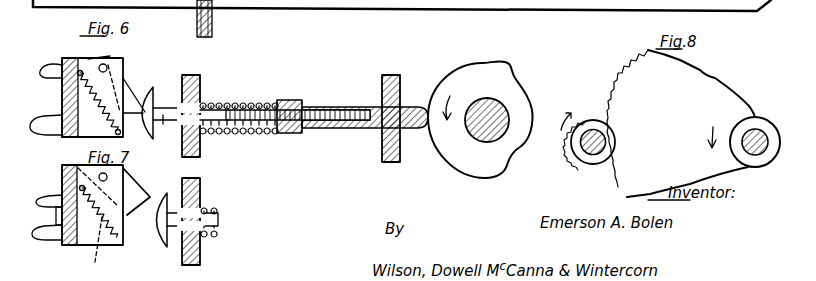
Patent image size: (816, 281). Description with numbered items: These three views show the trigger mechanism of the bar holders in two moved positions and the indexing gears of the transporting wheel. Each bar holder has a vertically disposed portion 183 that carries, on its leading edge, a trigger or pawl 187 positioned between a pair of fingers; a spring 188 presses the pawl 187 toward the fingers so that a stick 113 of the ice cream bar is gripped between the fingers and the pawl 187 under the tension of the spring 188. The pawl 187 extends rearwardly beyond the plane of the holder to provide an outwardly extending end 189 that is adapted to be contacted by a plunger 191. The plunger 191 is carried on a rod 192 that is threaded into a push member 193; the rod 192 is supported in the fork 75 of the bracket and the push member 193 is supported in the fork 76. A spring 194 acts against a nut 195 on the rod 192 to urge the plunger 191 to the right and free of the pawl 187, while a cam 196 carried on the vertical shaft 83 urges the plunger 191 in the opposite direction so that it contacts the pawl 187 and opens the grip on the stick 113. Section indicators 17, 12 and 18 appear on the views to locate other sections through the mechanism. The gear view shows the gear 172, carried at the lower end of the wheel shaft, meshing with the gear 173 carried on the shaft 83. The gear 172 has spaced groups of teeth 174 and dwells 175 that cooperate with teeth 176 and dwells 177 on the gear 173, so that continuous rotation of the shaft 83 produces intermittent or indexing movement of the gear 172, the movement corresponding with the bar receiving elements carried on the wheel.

In FIG. 6, the vertically disposed portion 183 is at (74, 36).
In FIG. 7, the vertically disposed portion 183 is at (75, 247).
In FIG. 6, the trigger or pawl 187 is at (52, 62).
In FIG. 7, the trigger or pawl 187 is at (52, 195).
In FIG. 6, the spring 188 is at (127, 78).
In FIG. 7, the spring 188 is at (98, 224).
In FIG. 6, the plunger 191 is at (153, 98).
In FIG. 7, the plunger 191 is at (157, 223).
In FIG. 6, the rod 192 is at (152, 128).
In FIG. 7, the rod 192 is at (173, 247).
In FIG. 6, the forked end 75 is at (200, 80).
In FIG. 7, the forked end 75 is at (200, 256).
In FIG. 6, the spring 194 is at (223, 130).
In FIG. 7, the spring 194 is at (218, 236).
In FIG. 6, the nut 195 is at (293, 100).
In FIG. 6, the push member 193 is at (380, 127).
In FIG. 6, the forked end 76 is at (400, 146).
In FIG. 6, the section line 17 is at (223, 25).
In FIG. 6, the section line 12 is at (263, 25).
In FIG. 6, the section line 18 is at (337, 27).
In FIG. 6, the cam 196 is at (455, 75).
In FIG. 6, the vertical shaft 83 is at (494, 99).
In FIG. 8, the vertical shaft 83 is at (605, 143).
In FIG. 7, the stick 113 is at (57, 220).
In FIG. 7, the outwardly extending end 189 is at (138, 194).
In FIG. 8, the gear 172 is at (693, 123).
In FIG. 8, the dwell 175 is at (645, 56).
In FIG. 8, the teeth 174 is at (628, 72).
In FIG. 8, the teeth 176 is at (578, 118).
In FIG. 8, the gear 173 is at (577, 153).
In FIG. 8, the dwell 177 is at (590, 160).